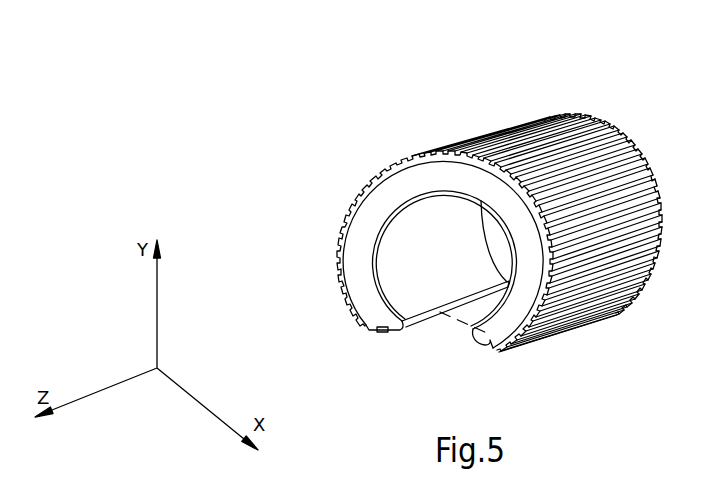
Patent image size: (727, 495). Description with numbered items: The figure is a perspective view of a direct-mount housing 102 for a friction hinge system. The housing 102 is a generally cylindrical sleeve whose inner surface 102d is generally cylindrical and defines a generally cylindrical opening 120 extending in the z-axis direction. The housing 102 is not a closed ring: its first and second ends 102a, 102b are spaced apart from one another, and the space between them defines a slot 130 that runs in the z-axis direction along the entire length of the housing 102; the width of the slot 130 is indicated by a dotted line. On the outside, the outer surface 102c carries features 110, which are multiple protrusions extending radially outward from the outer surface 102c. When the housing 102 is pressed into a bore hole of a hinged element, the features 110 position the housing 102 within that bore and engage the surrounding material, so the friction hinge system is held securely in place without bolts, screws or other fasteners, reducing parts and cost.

The direct-mount housing 102 is at (362, 108).
The features 110 is at (558, 143).
The outer surface 102c is at (577, 152).
The inner surface 102d is at (425, 237).
The cylindrical opening 120 is at (407, 277).
The first end 102a is at (418, 322).
The second end 102b is at (487, 348).
The slot 130 is at (455, 335).